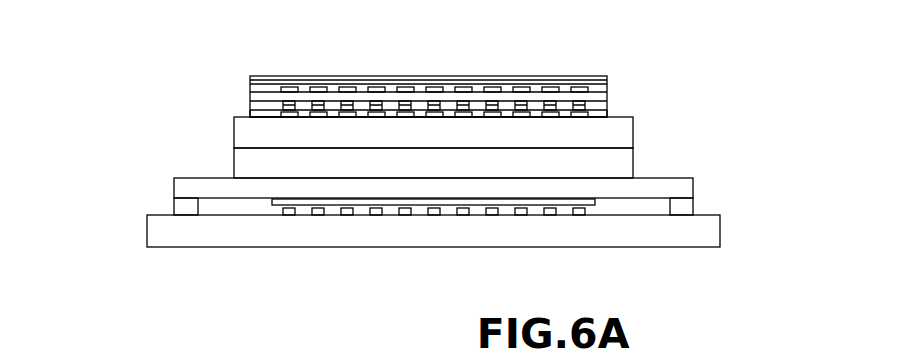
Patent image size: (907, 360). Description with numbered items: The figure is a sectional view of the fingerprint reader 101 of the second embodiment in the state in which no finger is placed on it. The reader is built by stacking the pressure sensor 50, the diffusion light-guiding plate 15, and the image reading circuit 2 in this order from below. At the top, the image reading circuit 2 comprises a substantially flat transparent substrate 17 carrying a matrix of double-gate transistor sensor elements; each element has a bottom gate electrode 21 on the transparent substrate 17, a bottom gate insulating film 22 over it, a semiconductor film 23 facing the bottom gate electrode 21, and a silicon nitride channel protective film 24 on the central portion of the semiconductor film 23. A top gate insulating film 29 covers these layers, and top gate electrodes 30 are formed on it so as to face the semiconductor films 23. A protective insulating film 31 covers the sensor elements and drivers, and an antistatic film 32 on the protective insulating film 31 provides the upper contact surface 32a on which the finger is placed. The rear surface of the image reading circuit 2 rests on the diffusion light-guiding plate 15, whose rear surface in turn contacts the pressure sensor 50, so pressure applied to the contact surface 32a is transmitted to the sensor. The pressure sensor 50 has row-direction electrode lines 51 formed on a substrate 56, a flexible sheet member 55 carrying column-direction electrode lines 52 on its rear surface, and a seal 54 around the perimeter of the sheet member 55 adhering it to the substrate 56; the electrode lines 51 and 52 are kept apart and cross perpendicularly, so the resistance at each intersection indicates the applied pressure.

The fingerprint reader 101 is at (738, 112).
The image reading circuit 2 is at (257, 66).
The contact surface 32a is at (557, 77).
The antistatic film 32 is at (253, 82).
The protective insulating film 31 is at (253, 90).
The top gate electrodes 30 is at (285, 86).
The top gate insulating film 29 is at (257, 100).
The channel protective film 24 is at (306, 92).
The semiconductor film 23 is at (343, 103).
The bottom gate electrode 21 is at (387, 108).
The bottom gate insulating film 22 is at (240, 116).
The transparent substrate 17 is at (613, 135).
The diffusion light-guiding plate 15 is at (613, 167).
The pressure sensor 50 is at (288, 259).
The sheet member 55 is at (192, 185).
The seal 54 is at (187, 209).
The electrode lines 52 is at (473, 206).
The electrode lines 51 is at (404, 217).
The substrate 56 is at (187, 236).